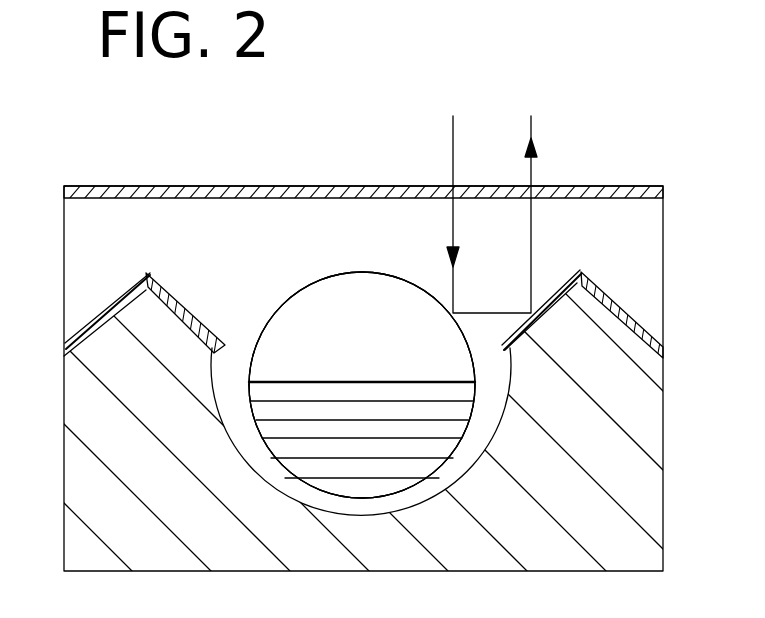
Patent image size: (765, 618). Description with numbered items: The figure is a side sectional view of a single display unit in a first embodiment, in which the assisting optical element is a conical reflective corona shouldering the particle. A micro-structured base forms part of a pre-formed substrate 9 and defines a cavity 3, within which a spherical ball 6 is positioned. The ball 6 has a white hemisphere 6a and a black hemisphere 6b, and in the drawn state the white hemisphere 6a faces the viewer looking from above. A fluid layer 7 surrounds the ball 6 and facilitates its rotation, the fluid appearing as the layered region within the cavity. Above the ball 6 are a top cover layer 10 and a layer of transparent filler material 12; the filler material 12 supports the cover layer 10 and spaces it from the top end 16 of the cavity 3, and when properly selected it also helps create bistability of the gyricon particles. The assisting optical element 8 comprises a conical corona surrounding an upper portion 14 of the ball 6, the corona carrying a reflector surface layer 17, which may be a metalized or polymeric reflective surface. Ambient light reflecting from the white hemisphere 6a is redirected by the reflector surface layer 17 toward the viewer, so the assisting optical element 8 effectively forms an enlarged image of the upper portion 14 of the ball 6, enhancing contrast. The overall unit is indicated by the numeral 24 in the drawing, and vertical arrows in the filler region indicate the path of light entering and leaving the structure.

The cavity 3 is at (273, 463).
The spherical ball 6 is at (299, 289).
The white hemisphere 6a is at (368, 295).
The black hemisphere 6b is at (408, 487).
The fluid layer 7 is at (487, 392).
The assisting optical element 8 is at (163, 285).
The pre-formed substrate 9 is at (602, 505).
The top cover layer 10 is at (580, 270).
The transparent filler material 12 is at (370, 212).
The upper portion 14 is at (410, 303).
The top end 16 is at (581, 272).
The reflector surface layer 17 is at (183, 303).
The assembly 24 is at (146, 140).